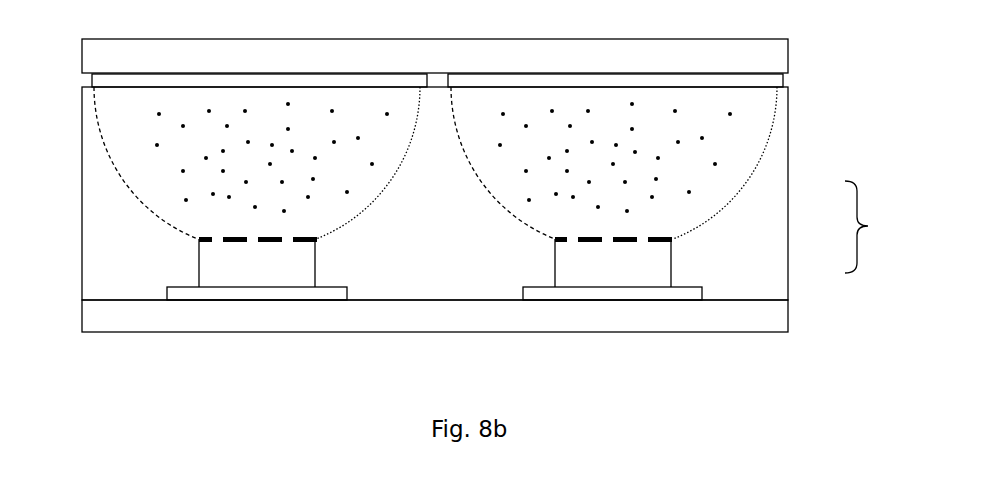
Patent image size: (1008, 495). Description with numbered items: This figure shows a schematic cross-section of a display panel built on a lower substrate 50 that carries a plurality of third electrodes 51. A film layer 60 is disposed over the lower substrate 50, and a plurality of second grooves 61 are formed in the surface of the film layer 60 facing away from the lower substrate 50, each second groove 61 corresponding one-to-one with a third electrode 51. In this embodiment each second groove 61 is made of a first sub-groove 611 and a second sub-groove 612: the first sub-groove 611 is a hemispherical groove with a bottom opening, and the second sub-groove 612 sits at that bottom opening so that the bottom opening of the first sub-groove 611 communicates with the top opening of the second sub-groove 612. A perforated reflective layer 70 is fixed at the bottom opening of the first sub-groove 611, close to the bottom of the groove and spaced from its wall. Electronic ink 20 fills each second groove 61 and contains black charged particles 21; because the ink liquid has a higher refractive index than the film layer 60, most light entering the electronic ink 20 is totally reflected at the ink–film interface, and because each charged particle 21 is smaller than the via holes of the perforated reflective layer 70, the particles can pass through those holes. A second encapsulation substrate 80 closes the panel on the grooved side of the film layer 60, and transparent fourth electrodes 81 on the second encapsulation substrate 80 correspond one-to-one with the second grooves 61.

The second encapsulation substrate 80 is at (768, 57).
The transparent fourth electrode 81 is at (590, 82).
The film layer 60 is at (108, 184).
The lower substrate 50 is at (772, 316).
The third electrode 51 is at (602, 293).
The second sub-groove 612 is at (663, 260).
The first sub-groove 611 is at (742, 192).
The second groove 61 is at (873, 227).
The perforated reflective layer 70 is at (198, 238).
The electronic ink 20 is at (729, 145).
The charged particle 21 is at (732, 114).